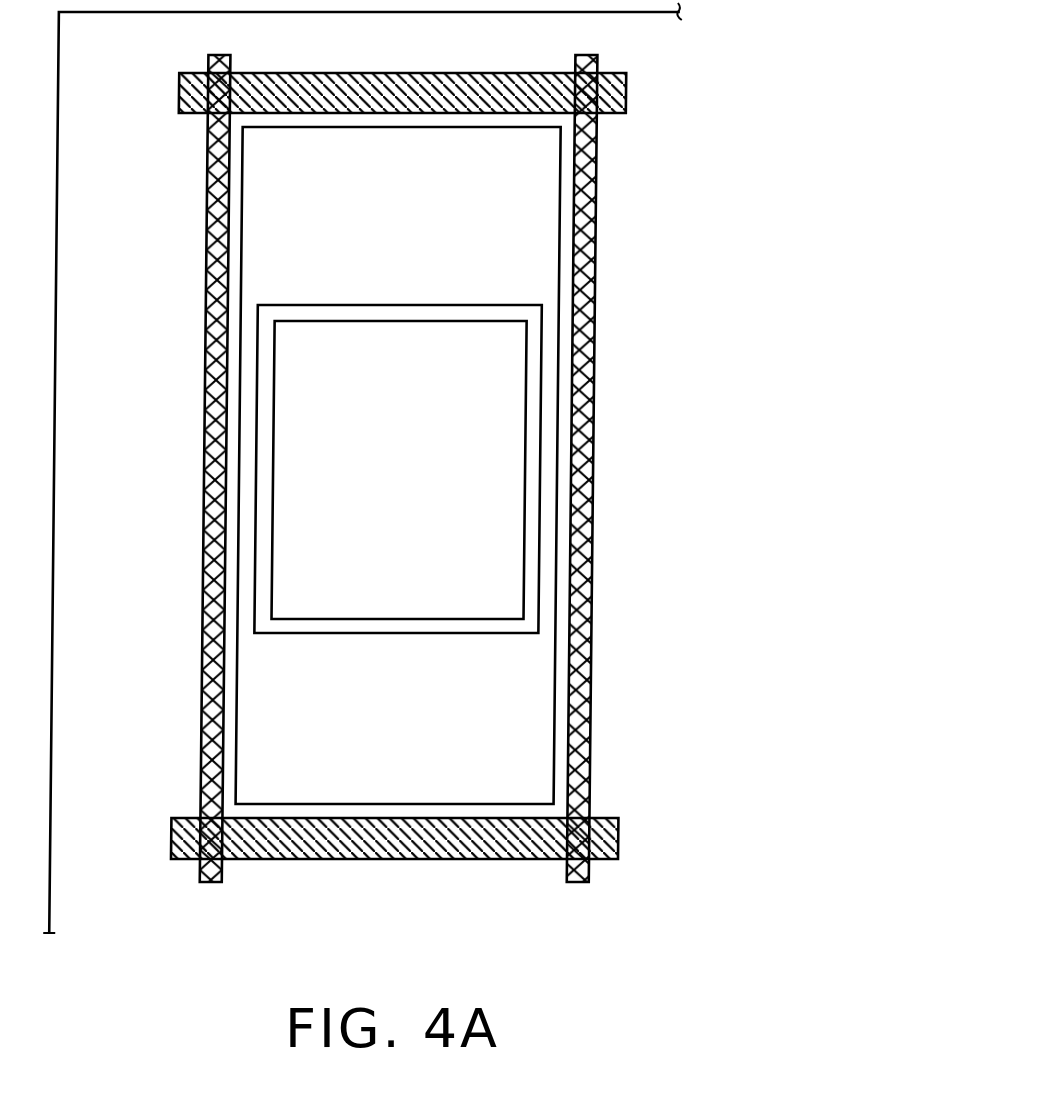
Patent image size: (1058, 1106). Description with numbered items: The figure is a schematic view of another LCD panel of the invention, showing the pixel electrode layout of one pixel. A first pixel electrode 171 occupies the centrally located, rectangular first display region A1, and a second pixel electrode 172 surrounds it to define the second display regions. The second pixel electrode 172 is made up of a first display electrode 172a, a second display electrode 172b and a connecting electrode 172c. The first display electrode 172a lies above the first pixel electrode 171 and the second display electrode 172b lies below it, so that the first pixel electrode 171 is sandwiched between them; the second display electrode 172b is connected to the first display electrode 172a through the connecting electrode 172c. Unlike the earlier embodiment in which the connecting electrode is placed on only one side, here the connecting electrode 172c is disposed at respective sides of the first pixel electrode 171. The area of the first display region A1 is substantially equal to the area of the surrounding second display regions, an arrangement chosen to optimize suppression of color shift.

The first pixel electrode 171 is at (307, 425).
The second pixel electrode 172 is at (560, 465).
The first display electrode 172a is at (523, 278).
The second display electrode 172b is at (490, 682).
The connecting electrode 172c is at (548, 428).
The first display region A1 is at (402, 468).